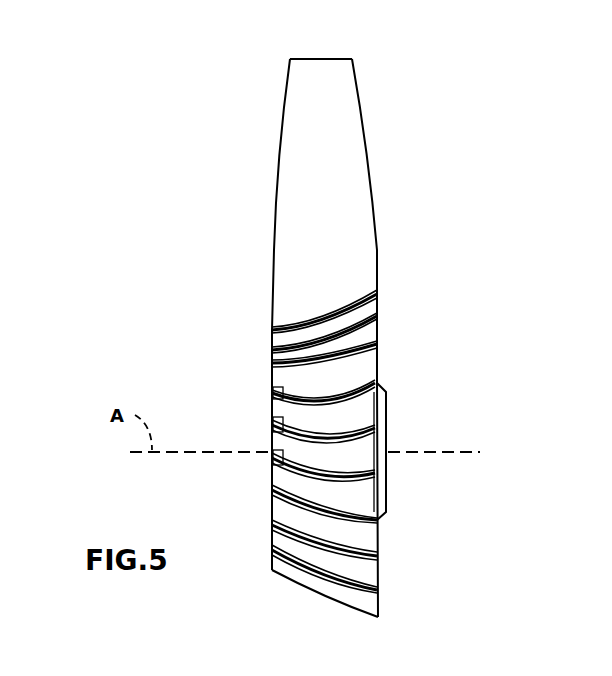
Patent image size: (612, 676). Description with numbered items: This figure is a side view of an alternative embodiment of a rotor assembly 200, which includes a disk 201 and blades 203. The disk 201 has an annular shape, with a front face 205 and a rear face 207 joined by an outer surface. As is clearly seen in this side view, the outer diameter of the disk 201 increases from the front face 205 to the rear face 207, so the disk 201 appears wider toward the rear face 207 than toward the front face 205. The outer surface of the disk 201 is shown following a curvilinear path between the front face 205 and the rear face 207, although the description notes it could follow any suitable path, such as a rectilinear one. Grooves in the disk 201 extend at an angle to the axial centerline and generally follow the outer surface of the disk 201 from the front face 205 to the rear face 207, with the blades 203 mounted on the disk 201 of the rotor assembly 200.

The rotor assembly 200 is at (228, 210).
The disk 201 is at (295, 517).
The blades 203 is at (343, 198).
The front face 205 is at (270, 437).
The rear face 207 is at (378, 368).